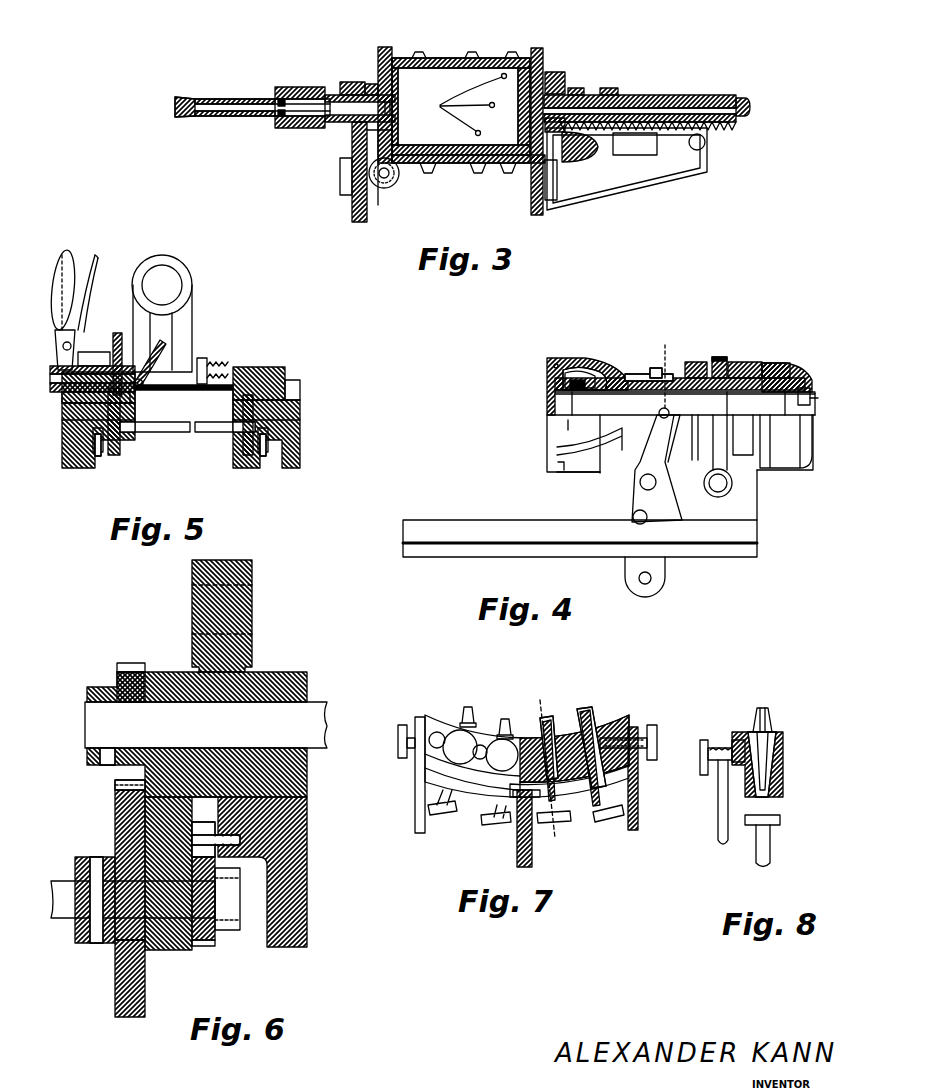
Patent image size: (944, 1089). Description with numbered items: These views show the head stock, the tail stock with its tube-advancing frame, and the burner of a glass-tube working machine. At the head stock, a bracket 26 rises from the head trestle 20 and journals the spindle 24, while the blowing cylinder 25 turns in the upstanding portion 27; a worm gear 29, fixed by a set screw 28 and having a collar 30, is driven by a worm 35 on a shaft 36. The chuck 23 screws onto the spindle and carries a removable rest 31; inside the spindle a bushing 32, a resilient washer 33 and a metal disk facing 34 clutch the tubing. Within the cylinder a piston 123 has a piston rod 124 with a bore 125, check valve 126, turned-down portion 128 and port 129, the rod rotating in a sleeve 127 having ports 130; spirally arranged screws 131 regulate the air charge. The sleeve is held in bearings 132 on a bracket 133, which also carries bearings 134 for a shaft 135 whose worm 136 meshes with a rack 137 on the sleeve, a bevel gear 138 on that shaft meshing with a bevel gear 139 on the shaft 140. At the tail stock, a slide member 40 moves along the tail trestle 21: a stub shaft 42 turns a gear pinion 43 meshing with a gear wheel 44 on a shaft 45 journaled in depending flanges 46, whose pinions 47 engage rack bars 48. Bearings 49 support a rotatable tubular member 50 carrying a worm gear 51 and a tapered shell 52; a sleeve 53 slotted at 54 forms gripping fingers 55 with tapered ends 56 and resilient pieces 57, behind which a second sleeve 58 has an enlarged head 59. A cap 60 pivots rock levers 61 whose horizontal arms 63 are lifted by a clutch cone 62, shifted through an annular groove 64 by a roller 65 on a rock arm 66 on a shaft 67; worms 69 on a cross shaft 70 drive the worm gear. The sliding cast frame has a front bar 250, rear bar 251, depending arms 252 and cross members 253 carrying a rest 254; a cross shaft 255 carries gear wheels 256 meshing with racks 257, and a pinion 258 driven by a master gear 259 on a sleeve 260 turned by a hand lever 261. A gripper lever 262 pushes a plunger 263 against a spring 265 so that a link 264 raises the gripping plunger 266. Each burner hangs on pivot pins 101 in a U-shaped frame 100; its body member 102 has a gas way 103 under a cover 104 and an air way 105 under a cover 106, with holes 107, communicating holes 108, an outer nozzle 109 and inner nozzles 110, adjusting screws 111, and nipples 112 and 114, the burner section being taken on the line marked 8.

In FIG. 3, the head trestle 20 is at (352, 205).
In FIG. 5, the tail trestle 21 is at (62, 462).
In FIG. 6, the tail trestle 21 is at (307, 846).
In FIG. 3, the chuck 23 is at (285, 90).
In FIG. 3, the spindle 24 is at (330, 92).
In FIG. 3, the blowing cylinder 25 is at (428, 58).
In FIG. 3, the bracket 26 is at (350, 82).
In FIG. 3, the upstanding portion 27 is at (538, 48).
In FIG. 3, the set screw 28 is at (370, 84).
In FIG. 3, the worm gear 29 is at (385, 47).
In FIG. 3, the collar 30 is at (352, 145).
In FIG. 3, the removable rest 31 is at (176, 102).
In FIG. 3, the bushing 32 is at (298, 108).
In FIG. 3, the washer 33 is at (283, 118).
In FIG. 3, the metal disk facing 34 is at (275, 125).
In FIG. 3, the worm 35 is at (398, 178).
In FIG. 3, the shaft 36 is at (384, 178).
In FIG. 5, the slide member 40 is at (65, 420).
In FIG. 4, the slide member 40 is at (580, 513).
In FIG. 6, the slide member 40 is at (307, 772).
In FIG. 4, the stub shaft 42 is at (633, 516).
In FIG. 6, the stub shaft 42 is at (315, 705).
In FIG. 6, the gear pinion 43 is at (117, 682).
In FIG. 6, the gear wheel 44 is at (115, 810).
In FIG. 4, the shaft 45 is at (652, 578).
In FIG. 6, the shaft 45 is at (70, 886).
In FIG. 4, the depending flanges 46 is at (625, 575).
In FIG. 6, the depending flanges 46 is at (160, 940).
In FIG. 6, the pinions 47 is at (204, 946).
In FIG. 5, the rack bars 48 is at (97, 452).
In FIG. 6, the rack bars 48 is at (215, 826).
In FIG. 4, the bearings 49 is at (696, 362).
In FIG. 4, the rotatable tubular member 50 is at (590, 378).
In FIG. 4, the worm gear 51 is at (720, 357).
In FIG. 4, the shell 52 is at (775, 363).
In FIG. 4, the sleeve 53 is at (735, 403).
In FIG. 4, the slots 54 is at (759, 405).
In FIG. 4, the gripping fingers 55 is at (787, 403).
In FIG. 4, the tapered ends 56 is at (800, 375).
In FIG. 4, the resilient pieces 57 is at (818, 397).
In FIG. 4, the second sleeve 58 is at (685, 402).
In FIG. 4, the enlarged head 59 is at (585, 403).
In FIG. 4, the cap 60 is at (547, 364).
In FIG. 4, the rock levers 61 is at (556, 384).
In FIG. 4, the clutch cone 62 is at (645, 374).
In FIG. 4, the horizontal arms 63 is at (600, 378).
In FIG. 4, the annular groove 64 is at (657, 368).
In FIG. 4, the roller 65 is at (666, 344).
In FIG. 4, the rock arm 66 is at (648, 445).
In FIG. 4, the shaft 67 is at (640, 482).
In FIG. 6, the shaft 67 is at (190, 604).
In FIG. 4, the worms 69 is at (730, 476).
In FIG. 4, the cross shaft 70 is at (726, 486).
In FIG. 7, the section line 8 is at (545, 769).
In FIG. 7, the U-shaped frames 100 is at (415, 828).
In FIG. 7, the pivot pins 101 is at (398, 745).
In FIG. 7, the principal body member 102 is at (620, 715).
In FIG. 8, the principal body member 102 is at (783, 730).
In FIG. 8, the gas way 103 is at (738, 732).
In FIG. 8, the cover 104 is at (734, 740).
In FIG. 7, the air way 105 is at (572, 792).
In FIG. 8, the air way 105 is at (783, 787).
In FIG. 7, the cover 106 is at (605, 795).
In FIG. 8, the cover 106 is at (775, 798).
In FIG. 8, the holes 107 is at (783, 745).
In FIG. 8, the communicating holes 108 is at (745, 778).
In FIG. 8, the outer nozzle 109 is at (770, 716).
In FIG. 8, the inner nozzles 110 is at (783, 767).
In FIG. 7, the adjusting screws 111 is at (548, 825).
In FIG. 8, the adjusting screws 111 is at (707, 762).
In FIG. 8, the nipple 112 is at (718, 835).
In FIG. 8, the nipple 114 is at (770, 850).
In FIG. 3, the piston 123 is at (520, 84).
In FIG. 3, the piston rod 124 is at (550, 84).
In FIG. 3, the bore 125 is at (522, 128).
In FIG. 3, the check valve 126 is at (522, 110).
In FIG. 3, the sleeve 127 is at (722, 95).
In FIG. 3, the turned down portion 128 is at (665, 95).
In FIG. 3, the port 129 is at (585, 118).
In FIG. 3, the ports 130 is at (586, 94).
In FIG. 3, the screws 131 is at (459, 105).
In FIG. 3, the bearings 132 is at (575, 88).
In FIG. 3, the bracket 133 is at (548, 210).
In FIG. 3, the bearings 134 is at (662, 155).
In FIG. 3, the shaft 135 is at (635, 144).
In FIG. 3, the worm 136 is at (578, 162).
In FIG. 3, the rack 137 is at (718, 128).
In FIG. 3, the bevel gear 138 is at (700, 150).
In FIG. 3, the bevel gear 139 is at (720, 140).
In FIG. 3, the shaft 140 is at (708, 148).
In FIG. 5, the front bar 250 is at (95, 352).
In FIG. 5, the rear bar 251 is at (265, 380).
In FIG. 5, the depending arms 252 is at (126, 438).
In FIG. 5, the cross members 253 is at (162, 391).
In FIG. 5, the rest 254 is at (192, 320).
In FIG. 5, the cross shaft 255 is at (180, 434).
In FIG. 5, the gear wheels 256 is at (100, 456).
In FIG. 5, the racks 257 is at (184, 406).
In FIG. 5, the pinion 258 is at (118, 455).
In FIG. 5, the master gear 259 is at (118, 333).
In FIG. 5, the sleeve 260 is at (55, 380).
In FIG. 5, the hand lever 261 is at (65, 250).
In FIG. 5, the gripper lever 262 is at (95, 262).
In FIG. 5, the plunger 263 is at (72, 395).
In FIG. 5, the link 264 is at (166, 345).
In FIG. 5, the spring 265 is at (225, 362).
In FIG. 5, the plunger 266 is at (168, 320).